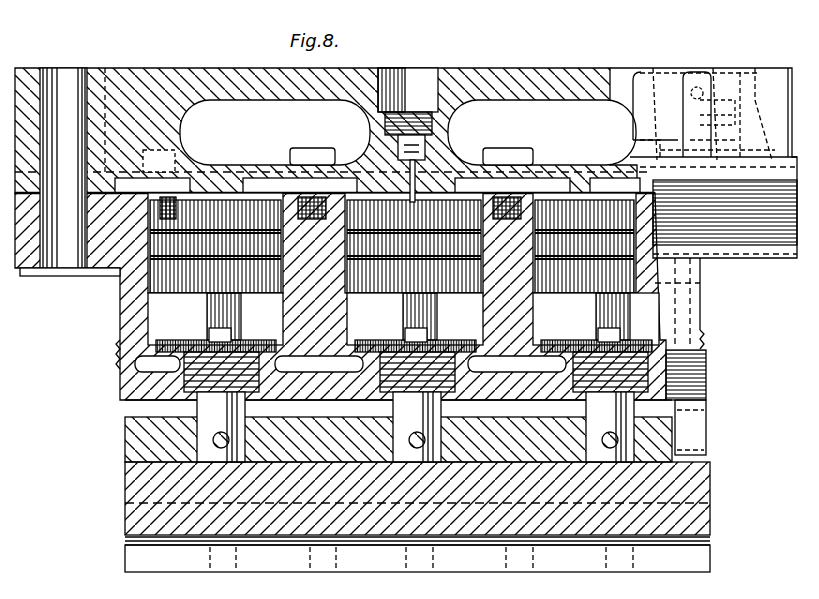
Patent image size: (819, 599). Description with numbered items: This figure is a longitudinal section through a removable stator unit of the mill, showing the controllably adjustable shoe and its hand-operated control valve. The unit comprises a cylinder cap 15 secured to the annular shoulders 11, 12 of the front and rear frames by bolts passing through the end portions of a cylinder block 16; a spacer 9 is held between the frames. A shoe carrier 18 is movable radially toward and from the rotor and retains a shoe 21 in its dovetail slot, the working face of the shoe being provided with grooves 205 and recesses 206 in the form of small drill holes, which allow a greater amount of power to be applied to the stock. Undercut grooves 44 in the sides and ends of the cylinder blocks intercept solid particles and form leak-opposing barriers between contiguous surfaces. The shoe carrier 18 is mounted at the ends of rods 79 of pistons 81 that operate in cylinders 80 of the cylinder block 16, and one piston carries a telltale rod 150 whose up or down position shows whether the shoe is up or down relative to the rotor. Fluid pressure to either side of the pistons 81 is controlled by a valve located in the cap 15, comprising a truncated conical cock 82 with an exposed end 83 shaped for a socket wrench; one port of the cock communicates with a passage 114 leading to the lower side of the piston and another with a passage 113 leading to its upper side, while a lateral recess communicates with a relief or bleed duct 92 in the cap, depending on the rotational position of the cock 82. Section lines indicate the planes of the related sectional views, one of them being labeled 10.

The cylinder cap 15 is at (137, 97).
The cylinder block 16 is at (133, 312).
The shoe carrier 18 is at (145, 437).
The shoe 21 is at (152, 487).
The grooves 205 is at (145, 551).
The recesses 206 is at (262, 570).
The annular shoulder 11 is at (37, 272).
The annular shoulder 12 is at (772, 258).
The undercut grooves 44 is at (122, 360).
The piston rods 79 is at (240, 316).
The cylinders 80 is at (480, 308).
The pistons 81 is at (392, 243).
The truncated conical cock 82 is at (707, 137).
The exposed end 83 is at (766, 62).
The relief duct 92 is at (709, 106).
The passage 113 is at (656, 62).
The passage 114 is at (732, 150).
The rod 150 is at (412, 93).
The spacer 9 is at (408, 68).
The section line 10 is at (679, 68).